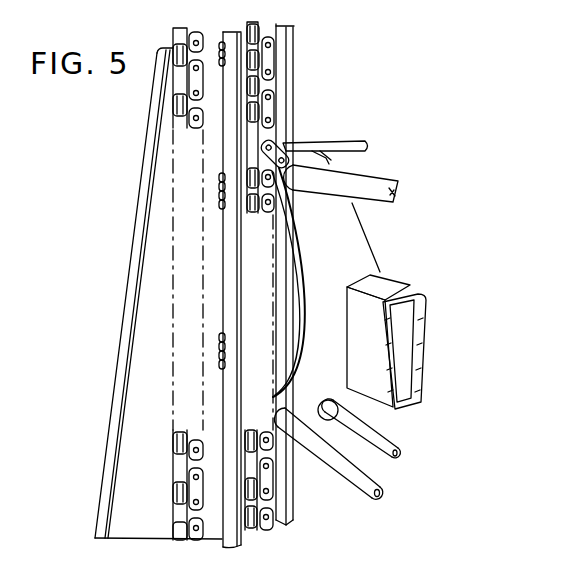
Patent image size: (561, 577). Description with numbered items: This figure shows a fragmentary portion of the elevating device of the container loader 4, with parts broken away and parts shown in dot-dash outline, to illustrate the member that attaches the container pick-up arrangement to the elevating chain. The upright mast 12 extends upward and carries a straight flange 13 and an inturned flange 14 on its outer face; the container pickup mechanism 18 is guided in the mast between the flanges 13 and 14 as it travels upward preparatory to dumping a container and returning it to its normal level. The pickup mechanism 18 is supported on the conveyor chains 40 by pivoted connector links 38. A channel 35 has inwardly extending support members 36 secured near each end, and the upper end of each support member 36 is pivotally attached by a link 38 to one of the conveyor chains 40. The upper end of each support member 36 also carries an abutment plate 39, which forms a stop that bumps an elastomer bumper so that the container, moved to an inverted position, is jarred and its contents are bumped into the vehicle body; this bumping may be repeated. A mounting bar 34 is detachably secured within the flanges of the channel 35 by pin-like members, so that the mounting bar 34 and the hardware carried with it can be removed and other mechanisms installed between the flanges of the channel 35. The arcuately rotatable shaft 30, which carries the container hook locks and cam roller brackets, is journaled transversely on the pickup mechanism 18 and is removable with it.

The container loader 4 is at (134, 152).
The upright mast 12 is at (140, 355).
The straight flange 13 is at (228, 32).
The inturned flange 14 is at (293, 64).
The container pickup mechanism 18 is at (396, 262).
The arcuately rotatable shaft 30 is at (345, 405).
The mounting bar 34 is at (418, 408).
The channel 35 is at (357, 337).
The inwardly extending support member 36 is at (357, 251).
The pivoted connector link 38 is at (280, 145).
The abutment plate 39 is at (363, 143).
The conveyor chain 40 is at (272, 115).